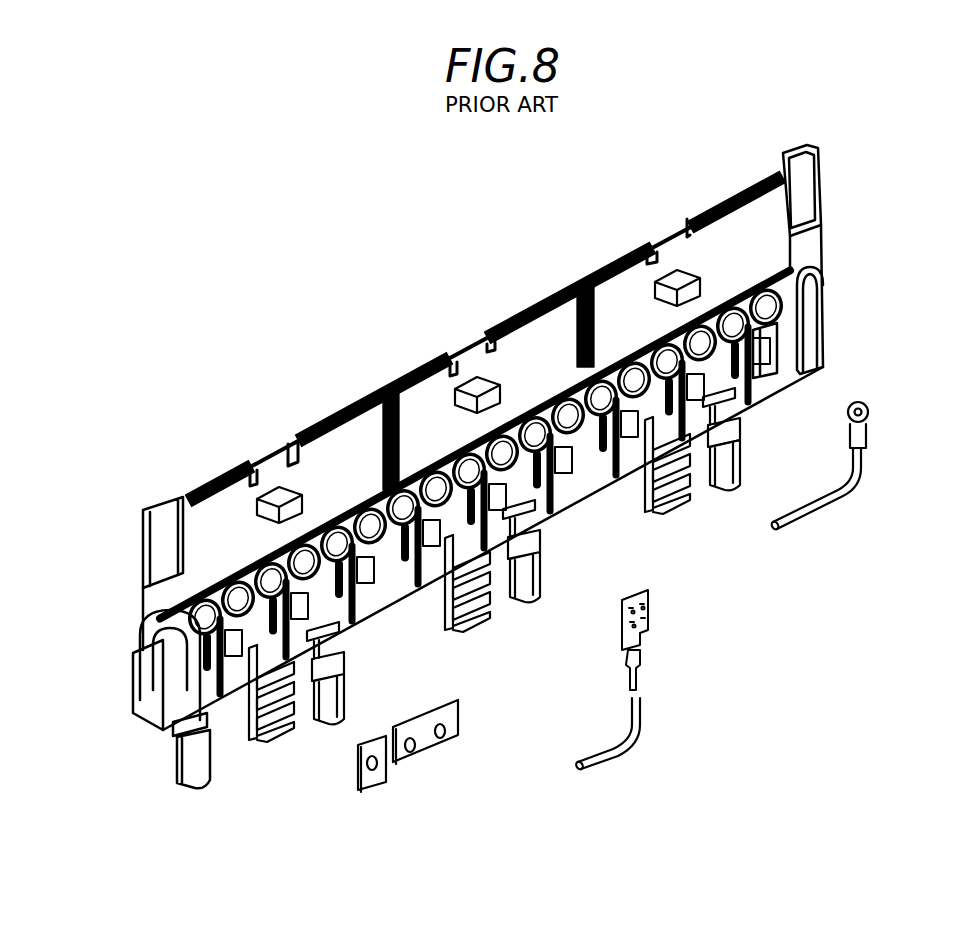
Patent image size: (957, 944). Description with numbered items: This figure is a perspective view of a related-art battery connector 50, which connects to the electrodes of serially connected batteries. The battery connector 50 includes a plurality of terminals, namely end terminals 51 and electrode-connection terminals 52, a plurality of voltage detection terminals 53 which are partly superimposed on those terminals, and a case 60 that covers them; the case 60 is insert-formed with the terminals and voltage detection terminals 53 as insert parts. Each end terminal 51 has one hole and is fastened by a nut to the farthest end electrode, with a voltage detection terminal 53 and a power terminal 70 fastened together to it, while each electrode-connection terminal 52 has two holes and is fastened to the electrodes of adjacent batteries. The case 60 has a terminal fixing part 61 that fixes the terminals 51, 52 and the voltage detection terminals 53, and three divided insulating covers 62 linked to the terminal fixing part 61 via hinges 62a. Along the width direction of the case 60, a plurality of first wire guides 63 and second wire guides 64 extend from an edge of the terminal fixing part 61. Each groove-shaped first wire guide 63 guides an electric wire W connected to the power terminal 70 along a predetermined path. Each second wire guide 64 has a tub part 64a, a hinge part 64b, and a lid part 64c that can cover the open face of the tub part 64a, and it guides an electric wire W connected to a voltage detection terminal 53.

The battery connector 50 is at (210, 388).
The case 60 is at (131, 539).
The terminal fixing part 61 is at (350, 597).
The insulating cover 62 is at (308, 452).
The hinge 62a is at (210, 590).
The first wire guide 63 is at (283, 723).
The second wire guide 64 is at (326, 719).
The tub part 64a is at (733, 412).
The hinge part 64b is at (737, 430).
The lid part 64c is at (740, 458).
The end terminal 51 is at (375, 767).
The electrode-connection terminal 52 is at (424, 730).
The voltage detection terminal 53 is at (651, 600).
The power terminal 70 is at (868, 408).
The electric wire W is at (825, 505).